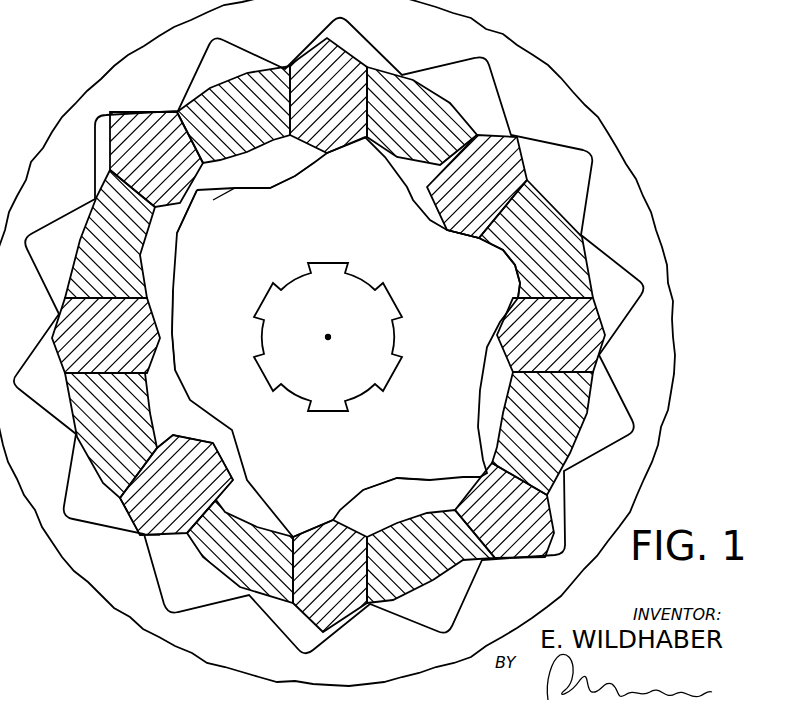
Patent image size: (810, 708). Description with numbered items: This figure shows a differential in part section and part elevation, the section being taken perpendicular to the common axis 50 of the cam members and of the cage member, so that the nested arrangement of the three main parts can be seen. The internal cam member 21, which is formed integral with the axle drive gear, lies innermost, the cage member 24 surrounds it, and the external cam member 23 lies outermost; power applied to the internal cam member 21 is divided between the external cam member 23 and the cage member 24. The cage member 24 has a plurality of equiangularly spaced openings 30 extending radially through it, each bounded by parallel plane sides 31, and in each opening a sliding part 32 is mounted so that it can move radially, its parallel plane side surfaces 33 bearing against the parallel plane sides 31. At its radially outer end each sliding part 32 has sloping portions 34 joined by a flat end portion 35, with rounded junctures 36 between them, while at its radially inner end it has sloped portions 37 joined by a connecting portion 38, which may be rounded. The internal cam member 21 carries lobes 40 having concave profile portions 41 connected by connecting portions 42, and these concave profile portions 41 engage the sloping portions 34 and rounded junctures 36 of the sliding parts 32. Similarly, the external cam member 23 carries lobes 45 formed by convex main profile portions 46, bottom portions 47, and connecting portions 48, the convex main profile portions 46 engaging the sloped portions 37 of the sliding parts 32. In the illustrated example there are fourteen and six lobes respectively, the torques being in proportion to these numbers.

The internal cam member 21 is at (527, 66).
The external cam member 23 is at (346, 337).
The cage member 24 is at (523, 443).
The openings 30 is at (168, 547).
The parallel plane sides 31 is at (487, 128).
The sliding part 32 is at (165, 463).
The parallel plane side surfaces 33 is at (436, 174).
The sloping portions 34 is at (132, 498).
The flat end portion 35 is at (143, 535).
The rounded junctures 36 is at (130, 530).
The sloped portions 37 is at (197, 437).
The connecting portion 38 is at (217, 445).
The lobes 40 is at (260, 43).
The concave profile portions 41 is at (326, 34).
The connecting portions 42 is at (95, 198).
The lobes 45 is at (213, 200).
The convex main profile portions 46 is at (170, 238).
The bottom portions 47 is at (173, 312).
The connecting portions 48 is at (143, 402).
The common axis 50 is at (328, 337).